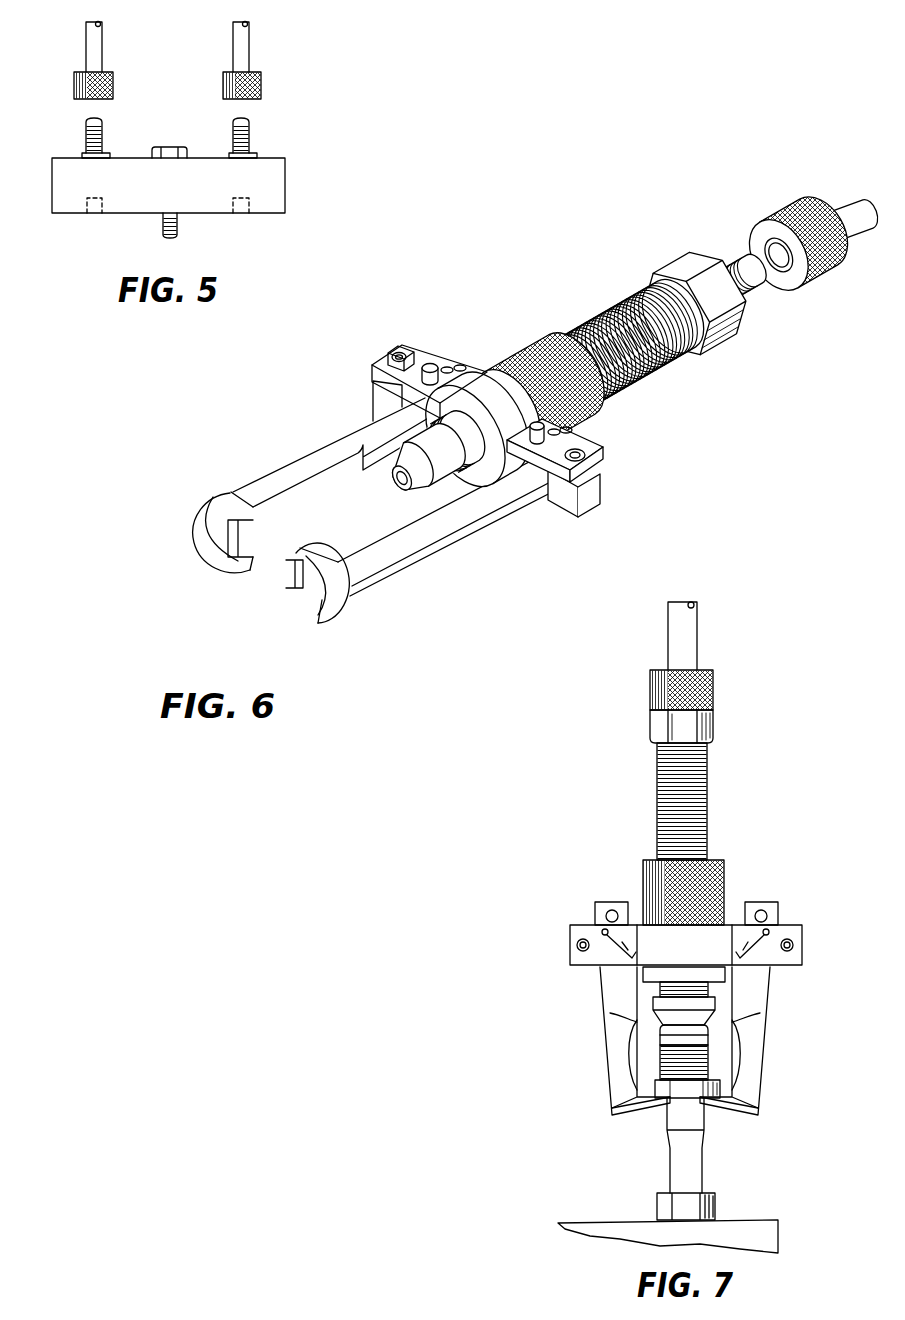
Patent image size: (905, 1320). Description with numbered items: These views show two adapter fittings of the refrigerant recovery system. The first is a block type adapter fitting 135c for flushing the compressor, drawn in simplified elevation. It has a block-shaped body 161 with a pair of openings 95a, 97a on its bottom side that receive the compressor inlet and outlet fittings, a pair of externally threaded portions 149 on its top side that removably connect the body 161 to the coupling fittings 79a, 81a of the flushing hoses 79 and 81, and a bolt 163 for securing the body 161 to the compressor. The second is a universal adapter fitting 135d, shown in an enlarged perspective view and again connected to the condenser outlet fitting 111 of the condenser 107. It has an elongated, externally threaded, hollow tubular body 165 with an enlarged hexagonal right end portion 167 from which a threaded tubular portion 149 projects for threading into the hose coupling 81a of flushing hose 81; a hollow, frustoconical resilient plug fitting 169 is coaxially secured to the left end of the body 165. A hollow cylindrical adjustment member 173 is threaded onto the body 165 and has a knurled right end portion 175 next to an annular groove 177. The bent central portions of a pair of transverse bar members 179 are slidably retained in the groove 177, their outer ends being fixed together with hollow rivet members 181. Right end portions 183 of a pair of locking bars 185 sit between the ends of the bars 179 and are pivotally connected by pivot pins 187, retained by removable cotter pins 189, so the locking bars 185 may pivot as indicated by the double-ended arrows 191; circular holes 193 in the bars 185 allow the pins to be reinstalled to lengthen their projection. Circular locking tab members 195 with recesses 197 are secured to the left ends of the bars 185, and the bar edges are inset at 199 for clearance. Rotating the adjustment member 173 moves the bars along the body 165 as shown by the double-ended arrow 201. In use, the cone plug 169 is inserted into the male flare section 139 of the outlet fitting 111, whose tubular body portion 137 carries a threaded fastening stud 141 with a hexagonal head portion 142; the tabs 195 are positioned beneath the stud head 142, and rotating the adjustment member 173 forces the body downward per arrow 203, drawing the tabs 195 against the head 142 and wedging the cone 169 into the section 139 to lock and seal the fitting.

In FIG. 5, the flushing hose 79 is at (103, 53).
In FIG. 5, the coupling fitting 79a is at (74, 89).
In FIG. 5, the flushing hose 81 is at (250, 53).
In FIG. 6, the flushing hose 81 is at (855, 195).
In FIG. 7, the flushing hose 81 is at (668, 641).
In FIG. 5, the coupling fitting 81a is at (262, 89).
In FIG. 6, the coupling fitting 81a is at (785, 216).
In FIG. 7, the coupling fitting 81a is at (650, 690).
In FIG. 5, the externally threaded portion 149 is at (102, 134).
In FIG. 6, the externally threaded portion 149 is at (748, 300).
In FIG. 5, the block-shaped body 161 is at (52, 180).
In FIG. 5, the block type adapter fitting 135c is at (187, 142).
In FIG. 5, the opening 95a is at (96, 216).
In FIG. 5, the opening 97a is at (243, 216).
In FIG. 5, the bolt 163 is at (175, 236).
In FIG. 6, the universal adapter fitting 135d is at (506, 405).
In FIG. 6, the tubular body 165 is at (620, 322).
In FIG. 7, the tubular body 165 is at (708, 770).
In FIG. 6, the hexagonal right end portion 167 is at (716, 335).
In FIG. 7, the hexagonal right end portion 167 is at (650, 729).
In FIG. 6, the resilient plug fitting 169 is at (395, 505).
In FIG. 7, the resilient plug fitting 169 is at (637, 1020).
In FIG. 6, the adjustment member 173 is at (545, 336).
In FIG. 7, the adjustment member 173 is at (718, 856).
In FIG. 6, the knurled right end portion 175 is at (578, 345).
In FIG. 7, the knurled right end portion 175 is at (644, 863).
In FIG. 6, the annular groove 177 is at (462, 362).
In FIG. 6, the bar members 179 is at (597, 483).
In FIG. 7, the bar members 179 is at (803, 964).
In FIG. 6, the hollow rivet members 181 is at (372, 360).
In FIG. 7, the hollow rivet members 181 is at (578, 946).
In FIG. 6, the right end portions 183 is at (400, 345).
In FIG. 7, the right end portions 183 is at (596, 903).
In FIG. 6, the locking bars 185 is at (315, 430).
In FIG. 7, the locking bars 185 is at (775, 985).
In FIG. 6, the pivot pins 187 is at (400, 350).
In FIG. 7, the pivot pins 187 is at (634, 947).
In FIG. 6, the cotter pins 189 is at (375, 392).
In FIG. 6, the double-ended arrows 191 is at (252, 472).
In FIG. 6, the circular holes 193 is at (432, 360).
In FIG. 7, the circular holes 193 is at (614, 902).
In FIG. 6, the locking tab members 195 is at (200, 532).
In FIG. 7, the locking tab members 195 is at (620, 1117).
In FIG. 6, the recesses 197 is at (238, 537).
In FIG. 6, the inset 199 is at (278, 490).
In FIG. 7, the inset 199 is at (630, 1048).
In FIG. 6, the double-ended arrow 201 is at (611, 405).
In FIG. 7, the arrow 203 is at (641, 765).
In FIG. 7, the tubular body portion 137 is at (710, 1036).
In FIG. 7, the male flare section 139 is at (708, 1028).
In FIG. 7, the fastening stud 141 is at (710, 1067).
In FIG. 7, the hexagonal head portion 142 is at (720, 1090).
In FIG. 7, the condenser outlet fitting 111 is at (668, 1174).
In FIG. 7, the condenser 107 is at (778, 1232).